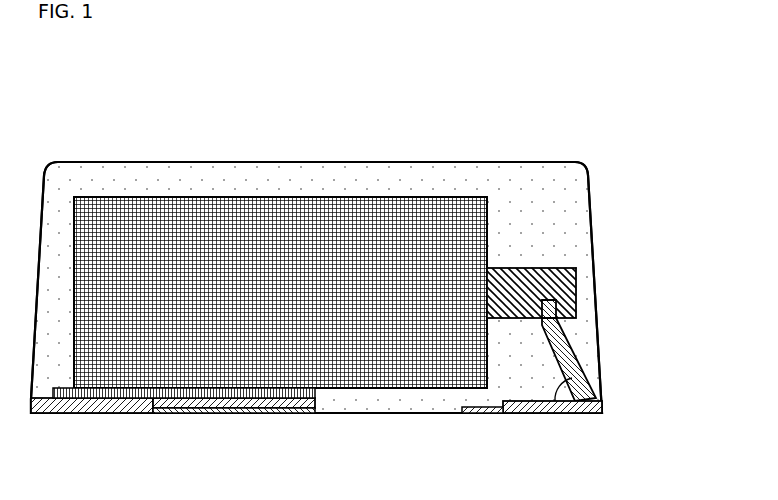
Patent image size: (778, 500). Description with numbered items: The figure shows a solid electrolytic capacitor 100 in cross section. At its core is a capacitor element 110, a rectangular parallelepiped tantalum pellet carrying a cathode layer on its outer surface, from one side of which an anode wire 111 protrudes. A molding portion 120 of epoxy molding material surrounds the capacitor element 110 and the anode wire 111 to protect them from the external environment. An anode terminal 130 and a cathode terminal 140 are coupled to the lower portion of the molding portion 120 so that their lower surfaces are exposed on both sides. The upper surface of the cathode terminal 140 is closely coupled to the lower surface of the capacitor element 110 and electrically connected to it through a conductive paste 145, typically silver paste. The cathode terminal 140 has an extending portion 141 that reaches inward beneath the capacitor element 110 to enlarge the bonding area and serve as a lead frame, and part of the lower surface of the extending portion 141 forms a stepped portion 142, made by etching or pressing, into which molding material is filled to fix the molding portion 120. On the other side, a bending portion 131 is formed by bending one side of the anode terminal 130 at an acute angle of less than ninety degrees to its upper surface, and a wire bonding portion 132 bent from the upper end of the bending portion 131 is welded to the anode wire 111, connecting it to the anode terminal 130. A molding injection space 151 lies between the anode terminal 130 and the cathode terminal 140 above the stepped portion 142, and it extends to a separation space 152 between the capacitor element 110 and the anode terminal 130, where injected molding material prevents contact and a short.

The solid electrolytic capacitor 100 is at (83, 68).
The capacitor element 110 is at (282, 215).
The anode wire 111 is at (535, 275).
The molding portion 120 is at (177, 177).
The anode terminal 130 is at (552, 410).
The bending portion 131 is at (565, 352).
The wire bonding portion 132 is at (556, 302).
The cathode terminal 140 is at (73, 405).
The extending portion 141 is at (290, 403).
The stepped portion 142 is at (163, 410).
The conductive paste 145 is at (230, 393).
The molding injection space 151 is at (395, 396).
The separation space 152 is at (481, 397).